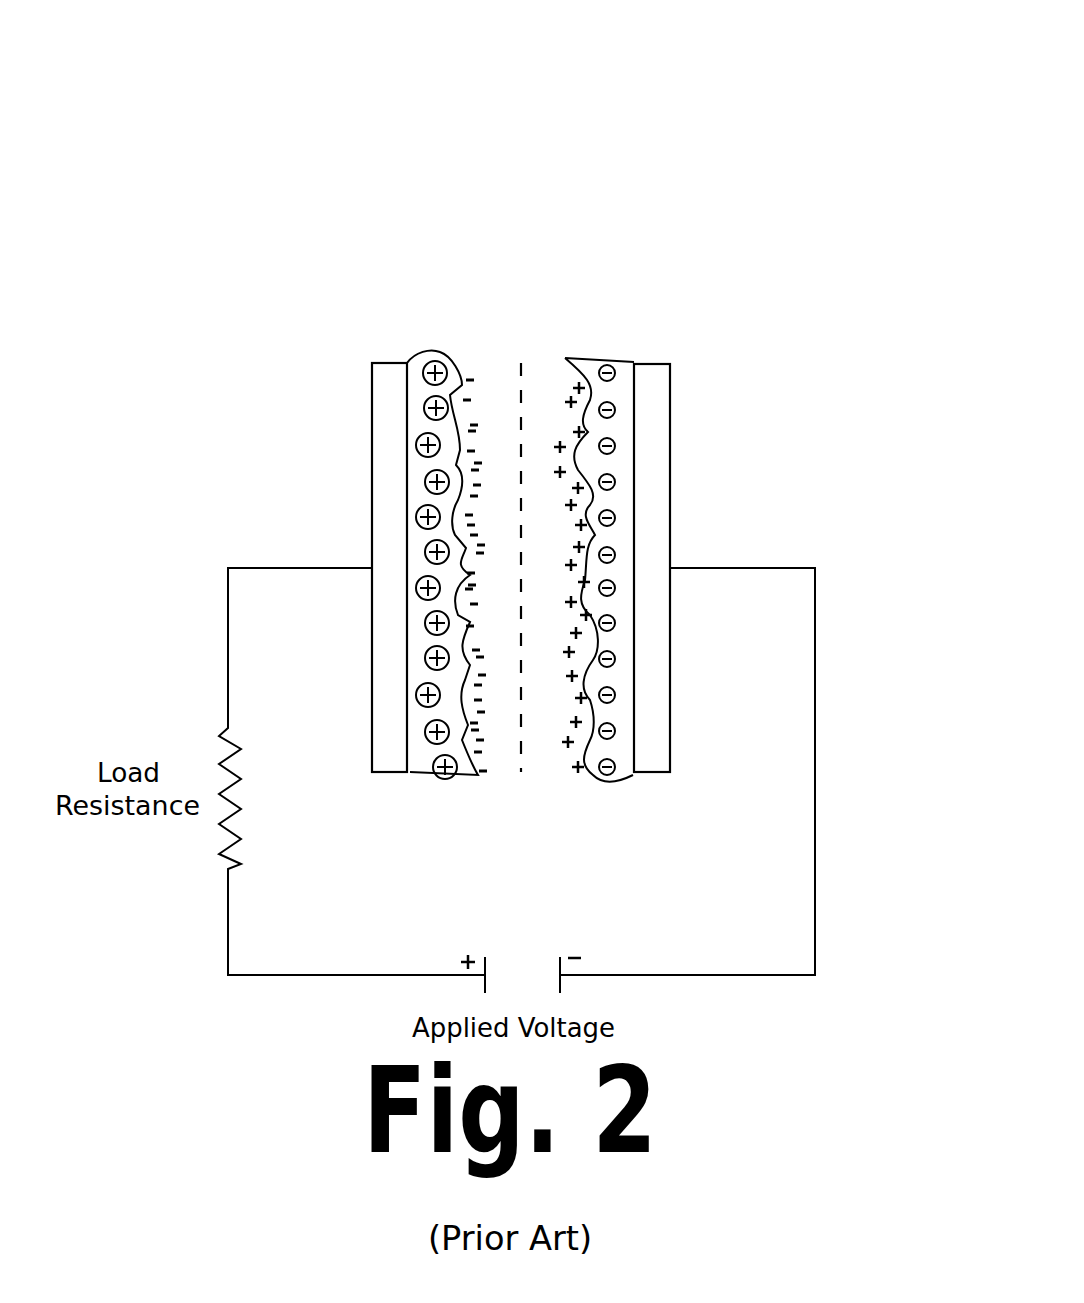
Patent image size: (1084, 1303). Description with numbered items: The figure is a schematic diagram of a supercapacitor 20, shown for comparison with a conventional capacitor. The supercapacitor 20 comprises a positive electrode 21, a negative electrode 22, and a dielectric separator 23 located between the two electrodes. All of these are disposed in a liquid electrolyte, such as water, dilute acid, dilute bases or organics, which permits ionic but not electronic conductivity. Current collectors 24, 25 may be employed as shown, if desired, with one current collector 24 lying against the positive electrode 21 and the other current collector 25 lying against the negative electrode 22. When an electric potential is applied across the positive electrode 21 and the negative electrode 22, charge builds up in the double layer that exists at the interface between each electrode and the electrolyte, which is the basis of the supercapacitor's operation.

The supercapacitor 20 is at (765, 305).
The positive electrode 21 is at (473, 355).
The negative electrode 22 is at (590, 352).
The dielectric separator 23 is at (523, 363).
The current collector 24 is at (372, 523).
The current collector 25 is at (670, 535).